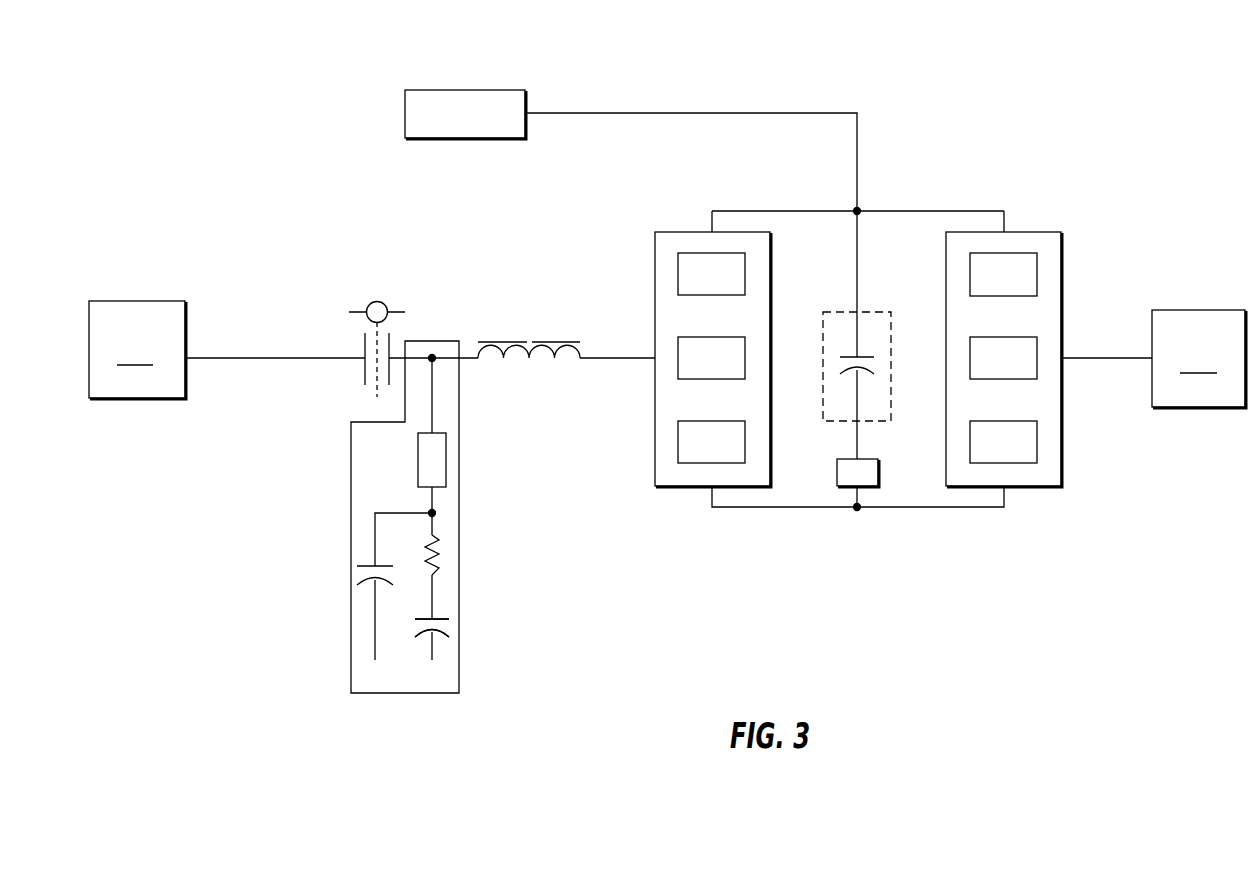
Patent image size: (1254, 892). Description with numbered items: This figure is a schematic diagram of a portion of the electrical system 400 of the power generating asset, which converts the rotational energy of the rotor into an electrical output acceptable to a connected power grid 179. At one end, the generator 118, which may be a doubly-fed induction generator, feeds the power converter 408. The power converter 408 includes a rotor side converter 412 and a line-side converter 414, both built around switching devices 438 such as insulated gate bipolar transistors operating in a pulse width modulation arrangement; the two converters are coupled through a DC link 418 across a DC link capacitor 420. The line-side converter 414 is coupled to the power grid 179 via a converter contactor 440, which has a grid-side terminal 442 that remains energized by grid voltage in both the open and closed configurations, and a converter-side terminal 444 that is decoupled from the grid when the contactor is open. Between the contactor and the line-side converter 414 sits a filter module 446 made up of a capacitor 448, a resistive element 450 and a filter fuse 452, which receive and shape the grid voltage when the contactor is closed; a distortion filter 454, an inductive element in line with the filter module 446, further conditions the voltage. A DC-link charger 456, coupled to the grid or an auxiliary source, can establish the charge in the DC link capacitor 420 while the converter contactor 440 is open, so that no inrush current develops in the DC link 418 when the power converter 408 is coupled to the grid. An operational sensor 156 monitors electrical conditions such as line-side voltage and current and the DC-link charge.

The electrical system 400 is at (203, 70).
The power grid 179 is at (137, 350).
The generator 118 is at (1199, 359).
The DC-link charger 456 is at (442, 102).
The converter contactor 440 is at (360, 327).
The grid-side terminal 442 is at (365, 380).
The converter-side terminal 444 is at (390, 335).
The filter fuse 452 is at (453, 460).
The resistive element 450 is at (453, 555).
The filter module 446 is at (453, 648).
The capacitor 448 is at (412, 634).
The distortion filter 454 is at (532, 332).
The line-side converter 414 is at (684, 353).
The switching devices 438 is at (692, 337).
The rotor side converter 412 is at (1062, 267).
The DC link 418 is at (881, 335).
The DC link capacitor 420 is at (872, 370).
The operational sensor 156 is at (867, 478).
The power converter 408 is at (1007, 572).